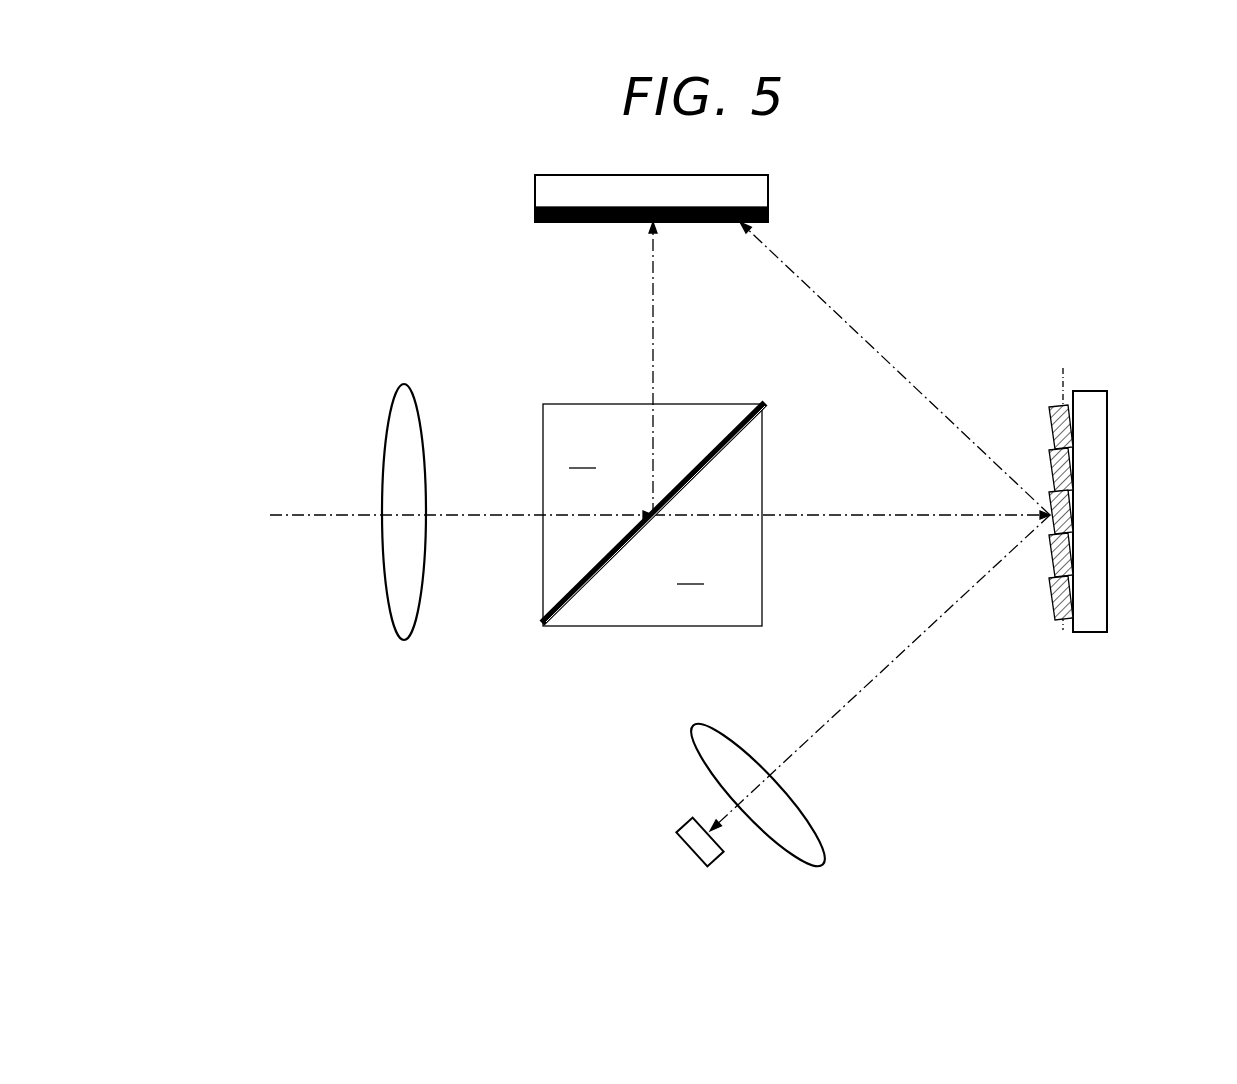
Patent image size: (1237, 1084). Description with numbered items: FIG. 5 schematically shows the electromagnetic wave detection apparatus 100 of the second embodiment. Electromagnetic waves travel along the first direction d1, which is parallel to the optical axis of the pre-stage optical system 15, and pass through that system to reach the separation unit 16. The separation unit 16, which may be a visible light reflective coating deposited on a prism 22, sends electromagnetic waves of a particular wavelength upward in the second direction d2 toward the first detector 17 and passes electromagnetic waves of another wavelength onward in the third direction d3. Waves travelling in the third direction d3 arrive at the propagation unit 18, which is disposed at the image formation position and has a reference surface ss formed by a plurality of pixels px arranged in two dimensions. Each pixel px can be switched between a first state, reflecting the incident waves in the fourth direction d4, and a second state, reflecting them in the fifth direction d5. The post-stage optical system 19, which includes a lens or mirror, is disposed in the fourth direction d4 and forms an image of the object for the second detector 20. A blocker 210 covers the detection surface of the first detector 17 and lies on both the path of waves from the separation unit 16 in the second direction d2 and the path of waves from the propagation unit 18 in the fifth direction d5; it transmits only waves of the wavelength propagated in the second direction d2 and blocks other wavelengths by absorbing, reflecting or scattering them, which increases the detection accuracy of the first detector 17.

The electromagnetic wave detection apparatus 100 is at (326, 818).
The pre-stage optical system 15 is at (404, 385).
The separation unit 16 is at (542, 626).
The first detector 17 is at (535, 189).
The blocker 210 is at (768, 217).
The propagation unit 18 is at (1107, 552).
The post-stage optical system 19 is at (817, 864).
The second detector 20 is at (703, 866).
The prism 22 is at (652, 515).
The reference surface ss is at (1063, 400).
The pixel px is at (1052, 562).
The first direction d1 is at (486, 517).
The second direction d2 is at (655, 312).
The third direction d3 is at (848, 517).
The fourth direction d4 is at (863, 690).
The fifth direction d5 is at (895, 368).